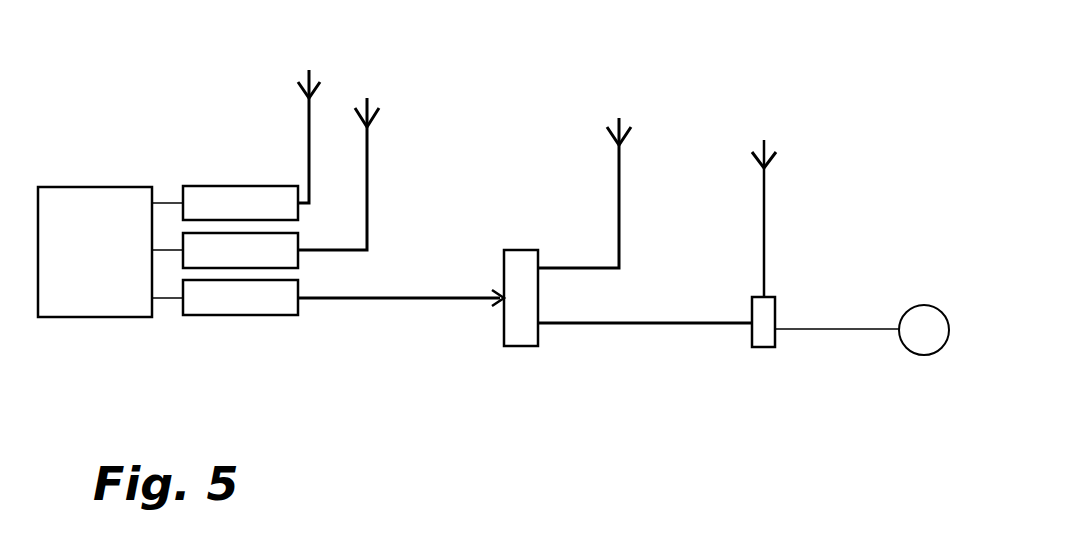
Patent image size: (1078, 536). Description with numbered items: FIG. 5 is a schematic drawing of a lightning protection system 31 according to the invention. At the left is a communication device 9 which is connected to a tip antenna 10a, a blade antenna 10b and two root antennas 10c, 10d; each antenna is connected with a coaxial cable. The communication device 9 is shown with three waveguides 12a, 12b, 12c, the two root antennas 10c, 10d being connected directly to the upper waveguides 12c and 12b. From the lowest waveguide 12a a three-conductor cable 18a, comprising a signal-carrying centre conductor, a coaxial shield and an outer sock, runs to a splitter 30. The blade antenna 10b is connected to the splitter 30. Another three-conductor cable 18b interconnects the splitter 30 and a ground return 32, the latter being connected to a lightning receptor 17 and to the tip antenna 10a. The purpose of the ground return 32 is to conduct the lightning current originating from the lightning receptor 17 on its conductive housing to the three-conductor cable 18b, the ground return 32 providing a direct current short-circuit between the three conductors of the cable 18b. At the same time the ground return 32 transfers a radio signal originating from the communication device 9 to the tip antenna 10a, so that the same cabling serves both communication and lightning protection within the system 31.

The communication device 9 is at (93, 304).
The waveguide 12a is at (259, 305).
The waveguide 12b is at (280, 260).
The waveguide 12c is at (230, 193).
The tip antenna 10a is at (752, 142).
The blade antenna 10b is at (622, 122).
The root antenna 10c is at (372, 108).
The root antenna 10d is at (310, 84).
The three-conductor cable 18a is at (443, 296).
The three-conductor cable 18b is at (683, 325).
The splitter 30 is at (528, 335).
The ground return 32 is at (758, 338).
The lightning receptor 17 is at (937, 318).
The lightning protection system 31 is at (344, 414).